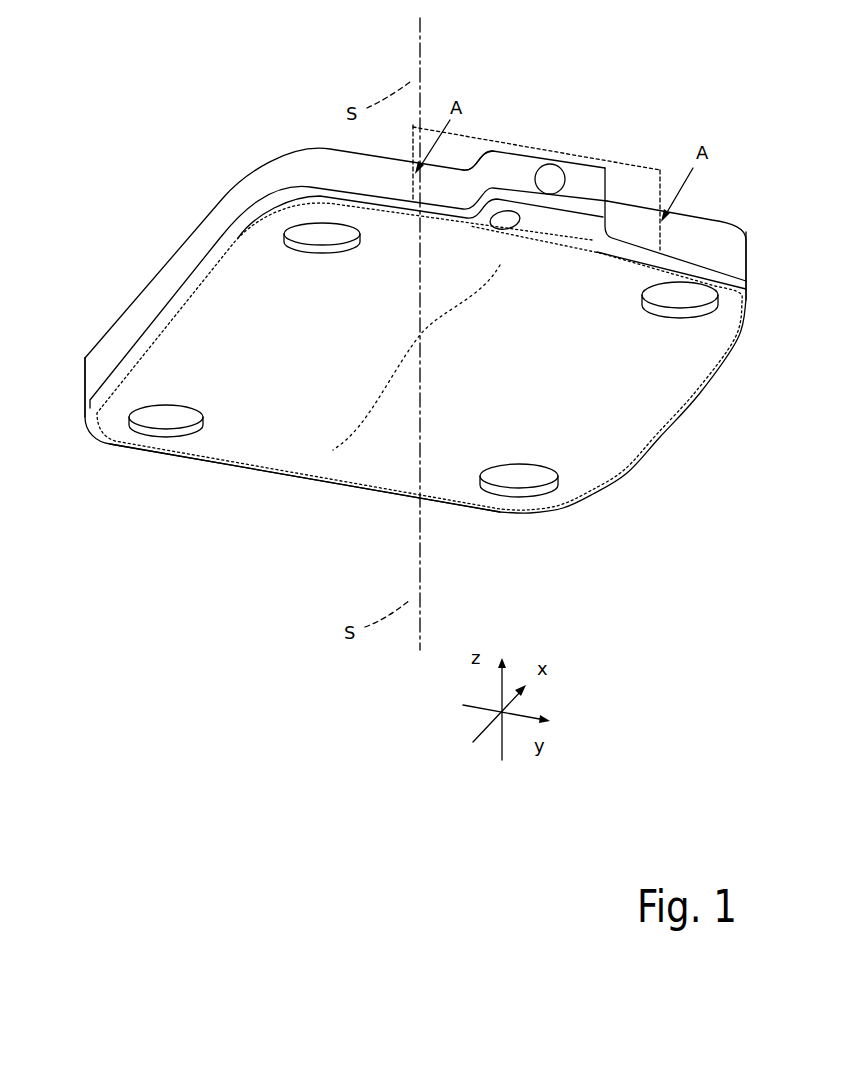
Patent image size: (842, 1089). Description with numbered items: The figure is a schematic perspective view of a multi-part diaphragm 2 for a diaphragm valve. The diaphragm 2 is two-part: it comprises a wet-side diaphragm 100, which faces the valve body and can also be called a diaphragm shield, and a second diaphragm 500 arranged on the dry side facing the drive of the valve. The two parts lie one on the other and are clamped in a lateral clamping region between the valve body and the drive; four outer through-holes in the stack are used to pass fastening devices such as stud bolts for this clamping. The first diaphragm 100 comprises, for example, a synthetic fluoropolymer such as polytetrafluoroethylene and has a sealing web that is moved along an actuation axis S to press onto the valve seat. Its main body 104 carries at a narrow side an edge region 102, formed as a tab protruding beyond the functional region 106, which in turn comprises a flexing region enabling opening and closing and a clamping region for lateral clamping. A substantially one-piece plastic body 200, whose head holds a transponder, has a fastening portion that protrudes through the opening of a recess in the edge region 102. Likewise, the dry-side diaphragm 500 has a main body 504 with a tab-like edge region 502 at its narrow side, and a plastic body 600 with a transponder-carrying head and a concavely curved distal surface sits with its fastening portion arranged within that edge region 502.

The multi-part diaphragm 2 is at (113, 137).
The wet-side diaphragm 100 is at (228, 239).
The edge region 102 is at (517, 192).
The main body 104 is at (560, 385).
The functional region 106 is at (252, 472).
The plastic body 200 is at (507, 212).
The dry-side diaphragm 500 is at (263, 181).
The edge region 502 is at (592, 173).
The main body 504 is at (112, 340).
The plastic body 600 is at (554, 174).